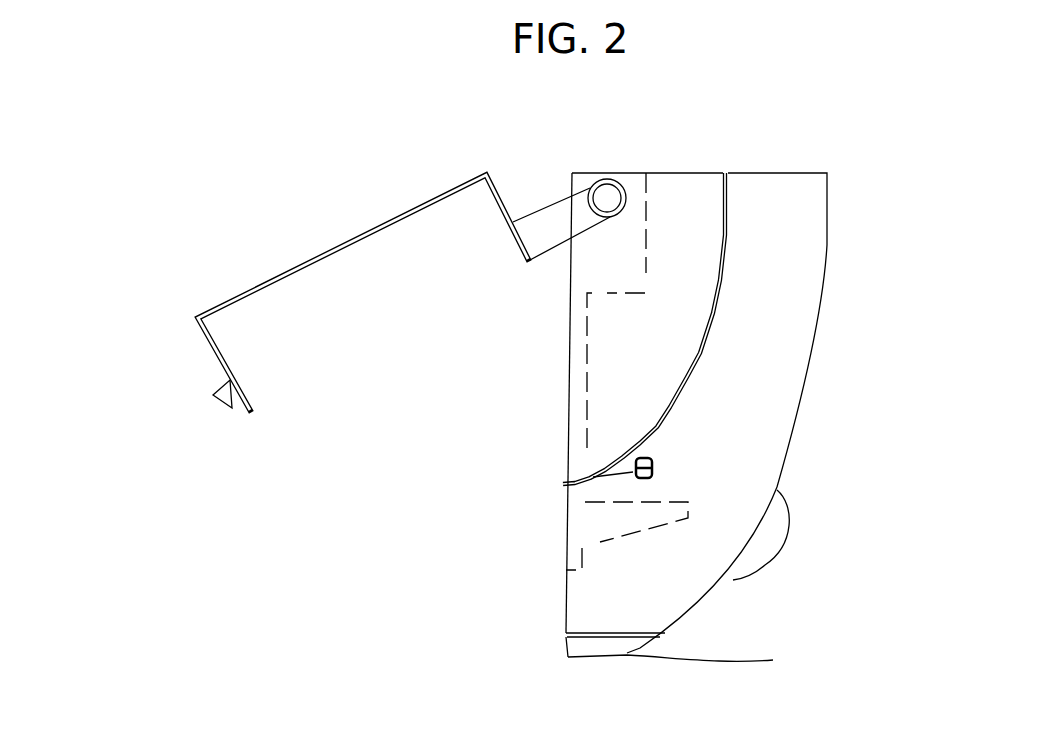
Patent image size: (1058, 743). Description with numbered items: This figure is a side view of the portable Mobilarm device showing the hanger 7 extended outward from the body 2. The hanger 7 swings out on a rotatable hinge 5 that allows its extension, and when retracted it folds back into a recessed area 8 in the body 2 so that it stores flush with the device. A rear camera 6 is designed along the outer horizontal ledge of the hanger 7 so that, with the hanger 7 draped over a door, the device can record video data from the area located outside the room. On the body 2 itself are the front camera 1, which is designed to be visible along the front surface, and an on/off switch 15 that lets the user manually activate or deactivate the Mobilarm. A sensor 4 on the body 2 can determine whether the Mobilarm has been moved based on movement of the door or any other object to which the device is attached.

The front camera 1 is at (780, 551).
The body 2 is at (758, 352).
The sensor 4 is at (773, 660).
The rotatable hinge 5 is at (610, 180).
The rear camera 6 is at (227, 405).
The hanger 7 is at (323, 258).
The recessed area 8 is at (577, 362).
The on/off switch 15 is at (567, 487).